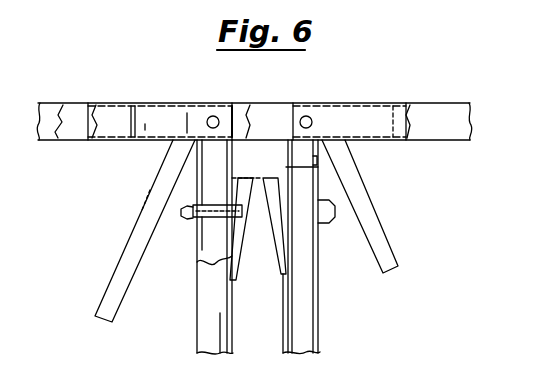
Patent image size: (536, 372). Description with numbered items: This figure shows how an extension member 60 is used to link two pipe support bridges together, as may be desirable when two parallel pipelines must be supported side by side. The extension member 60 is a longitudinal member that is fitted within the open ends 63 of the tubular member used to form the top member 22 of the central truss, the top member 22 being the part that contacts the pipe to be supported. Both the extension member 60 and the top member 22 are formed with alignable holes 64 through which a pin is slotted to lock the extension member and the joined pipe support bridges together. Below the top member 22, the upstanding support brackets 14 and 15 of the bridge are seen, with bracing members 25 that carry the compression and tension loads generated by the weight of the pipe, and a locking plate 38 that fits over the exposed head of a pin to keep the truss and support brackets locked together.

The top member 22 is at (72, 113).
The extension member 60 is at (262, 103).
The open ends 63 is at (231, 105).
The alignable holes 64 is at (207, 119).
The bracing members 25 is at (134, 240).
The support bracket 15 is at (193, 329).
The support bracket 14 is at (323, 319).
The locking plate 38 is at (286, 229).